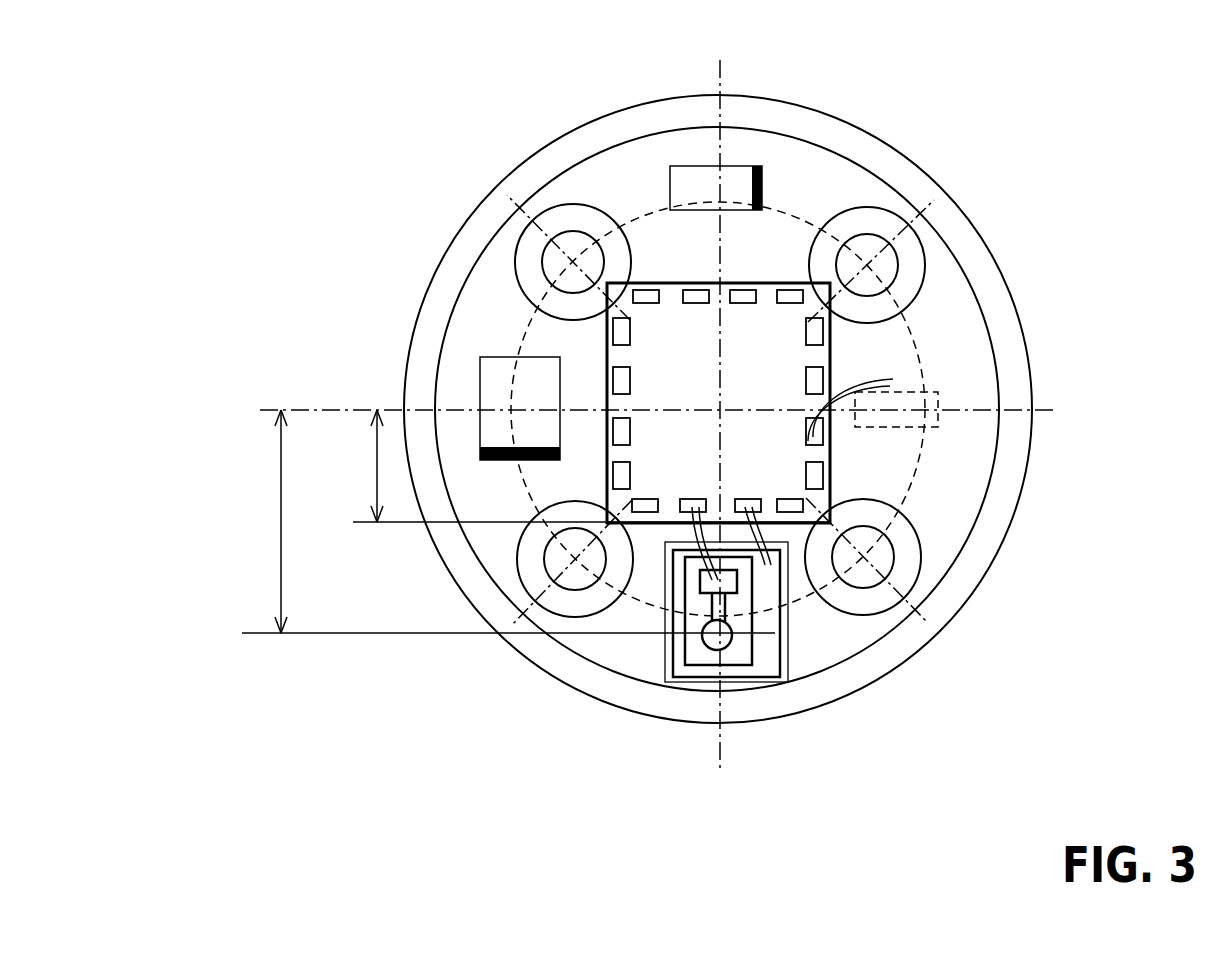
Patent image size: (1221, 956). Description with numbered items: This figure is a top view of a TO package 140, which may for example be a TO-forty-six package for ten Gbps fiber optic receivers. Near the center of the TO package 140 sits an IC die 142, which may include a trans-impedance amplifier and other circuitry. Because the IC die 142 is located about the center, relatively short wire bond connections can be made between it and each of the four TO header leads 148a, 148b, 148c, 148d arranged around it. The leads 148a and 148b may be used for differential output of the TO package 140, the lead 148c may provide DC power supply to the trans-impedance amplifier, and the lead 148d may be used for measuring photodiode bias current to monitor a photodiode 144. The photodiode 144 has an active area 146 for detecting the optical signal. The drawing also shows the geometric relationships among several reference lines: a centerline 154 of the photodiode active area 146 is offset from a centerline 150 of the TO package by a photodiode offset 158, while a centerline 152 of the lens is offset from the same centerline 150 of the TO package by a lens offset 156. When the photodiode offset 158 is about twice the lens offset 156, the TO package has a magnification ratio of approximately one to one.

The TO package 140 is at (853, 124).
The IC die 142 is at (778, 388).
The photodiode 144 is at (660, 637).
The photodiode active area 146 is at (703, 648).
The TO header lead 148a is at (888, 267).
The TO header lead 148b is at (563, 238).
The TO header lead 148c is at (572, 577).
The TO header lead 148d is at (873, 577).
The centerline of the TO package 150 is at (323, 408).
The centerline of the lens 152 is at (393, 523).
The centerline of the photodiode active area 154 is at (337, 637).
The lens offset 156 is at (377, 453).
The photodiode offset 158 is at (282, 482).